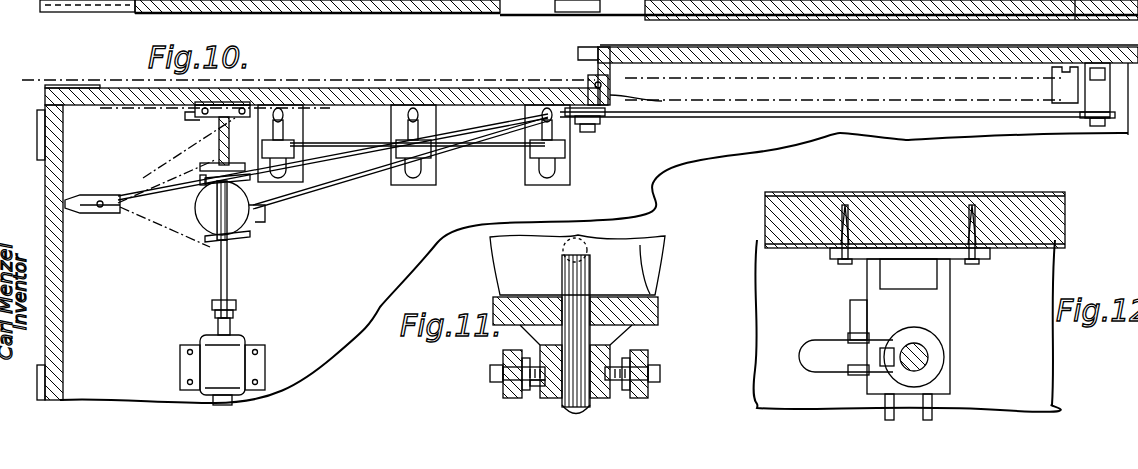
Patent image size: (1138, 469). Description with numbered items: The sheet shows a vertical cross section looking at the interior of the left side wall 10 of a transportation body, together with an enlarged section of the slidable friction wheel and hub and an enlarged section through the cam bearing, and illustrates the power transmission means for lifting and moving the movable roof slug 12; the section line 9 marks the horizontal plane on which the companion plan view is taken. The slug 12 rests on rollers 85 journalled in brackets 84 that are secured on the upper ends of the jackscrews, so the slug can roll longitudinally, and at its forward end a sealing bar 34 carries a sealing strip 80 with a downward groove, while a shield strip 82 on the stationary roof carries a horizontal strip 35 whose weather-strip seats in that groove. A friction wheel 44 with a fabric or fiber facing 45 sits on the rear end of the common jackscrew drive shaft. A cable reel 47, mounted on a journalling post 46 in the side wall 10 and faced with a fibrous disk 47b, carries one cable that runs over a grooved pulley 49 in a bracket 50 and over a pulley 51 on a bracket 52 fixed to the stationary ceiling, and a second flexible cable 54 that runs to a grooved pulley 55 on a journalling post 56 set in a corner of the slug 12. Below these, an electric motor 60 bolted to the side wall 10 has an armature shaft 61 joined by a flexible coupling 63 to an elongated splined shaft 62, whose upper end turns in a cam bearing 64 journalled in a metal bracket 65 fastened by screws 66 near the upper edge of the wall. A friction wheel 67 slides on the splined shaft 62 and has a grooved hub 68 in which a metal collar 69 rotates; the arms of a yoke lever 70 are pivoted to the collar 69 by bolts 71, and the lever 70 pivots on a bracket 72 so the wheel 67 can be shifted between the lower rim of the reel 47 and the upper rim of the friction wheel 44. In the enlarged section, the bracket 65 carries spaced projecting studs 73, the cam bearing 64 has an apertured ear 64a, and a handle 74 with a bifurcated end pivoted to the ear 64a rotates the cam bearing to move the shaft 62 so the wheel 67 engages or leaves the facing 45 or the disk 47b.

In FIG. 10, the section line 9— 9 is at (35, 82).
In FIG. 12, the side wall 10 is at (880, 214).
In FIG. 10, the movable slug 12 is at (90, 11).
In FIG. 10, the sealing bar 34 is at (648, 84).
In FIG. 10, the horizontal strip 35 is at (615, 96).
In FIG. 10, the friction wheel 44 is at (284, 148).
In FIG. 10, the friction facing 45 is at (290, 150).
In FIG. 11, the journalling post 46 is at (562, 249).
In FIG. 10, the cable reel 47 is at (250, 210).
In FIG. 11, the cable reel 47 is at (672, 246).
In FIG. 10, the fibrous disk 47b is at (265, 225).
In FIG. 11, the fibrous disk 47b is at (658, 269).
In FIG. 10, the grooved pulley 49 is at (590, 130).
In FIG. 10, the journalling bracket 50 is at (585, 140).
In FIG. 10, the grooved pulley 51 is at (1080, 136).
In FIG. 10, the bracket 52 is at (1090, 70).
In FIG. 10, the flexible cable 54 is at (318, 197).
In FIG. 10, the grooved pulley 55 is at (550, 108).
In FIG. 10, the journalling post 56 is at (562, 108).
In FIG. 10, the electric motor 60 is at (250, 340).
In FIG. 10, the armature shaft 61 is at (240, 312).
In FIG. 10, the splined shaft 62 is at (230, 273).
In FIG. 11, the splined shaft 62 is at (600, 408).
In FIG. 12, the splined shaft 62 is at (929, 357).
In FIG. 10, the flexible coupling 63 is at (213, 308).
In FIG. 10, the cam bearing 64 is at (245, 88).
In FIG. 12, the cam bearing 64 is at (926, 340).
In FIG. 12, the apertured ear 64a is at (906, 330).
In FIG. 10, the metal bracket 65 is at (240, 102).
In FIG. 12, the metal bracket 65 is at (945, 298).
In FIG. 12, the screws 66 is at (976, 263).
In FIG. 10, the friction wheel 67 is at (200, 183).
In FIG. 11, the friction wheel 67 is at (655, 315).
In FIG. 11, the hub portion 68 is at (620, 349).
In FIG. 11, the metal collar 69 is at (533, 384).
In FIG. 10, the yoke lever 70 is at (151, 188).
In FIG. 11, the yoke lever 70 is at (503, 390).
In FIG. 11, the bolts 71 is at (500, 372).
In FIG. 10, the metal bracket 72 is at (105, 195).
In FIG. 12, the projecting studs 73 is at (858, 333).
In FIG. 10, the handle 74 is at (207, 105).
In FIG. 12, the handle 74 is at (810, 352).
In FIG. 10, the sealing strip 80 is at (606, 78).
In FIG. 10, the shield strip 82 is at (585, 56).
In FIG. 10, the journalling bracket 84 is at (430, 128).
In FIG. 10, the roller 85 is at (413, 108).